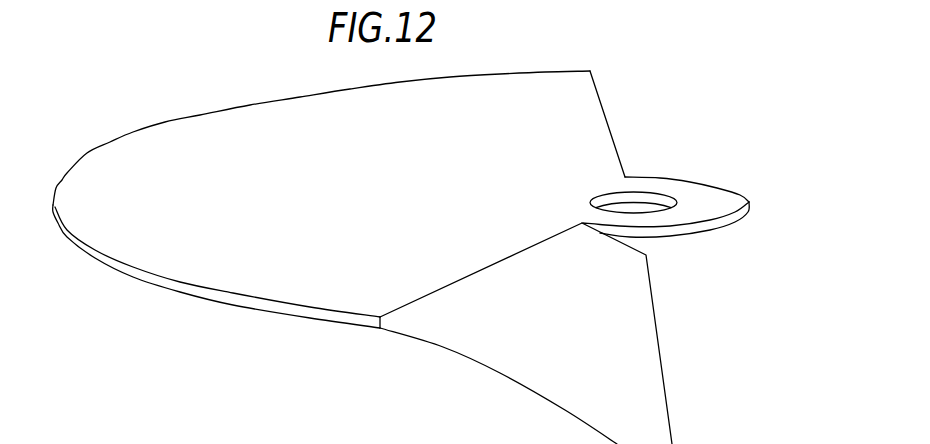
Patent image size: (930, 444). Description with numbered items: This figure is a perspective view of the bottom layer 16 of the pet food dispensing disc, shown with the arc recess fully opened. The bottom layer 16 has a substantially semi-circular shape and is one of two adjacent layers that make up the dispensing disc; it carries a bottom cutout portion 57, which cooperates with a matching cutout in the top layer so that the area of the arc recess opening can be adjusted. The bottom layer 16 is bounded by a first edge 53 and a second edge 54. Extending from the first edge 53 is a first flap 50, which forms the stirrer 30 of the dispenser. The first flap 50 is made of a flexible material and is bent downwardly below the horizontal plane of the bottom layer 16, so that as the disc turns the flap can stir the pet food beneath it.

The bottom layer 16 is at (201, 114).
The stirrer 30 is at (703, 414).
The first flap 50 is at (640, 340).
The first edge 53 is at (437, 293).
The second edge 54 is at (609, 122).
The bottom cutout portion 57 is at (752, 150).